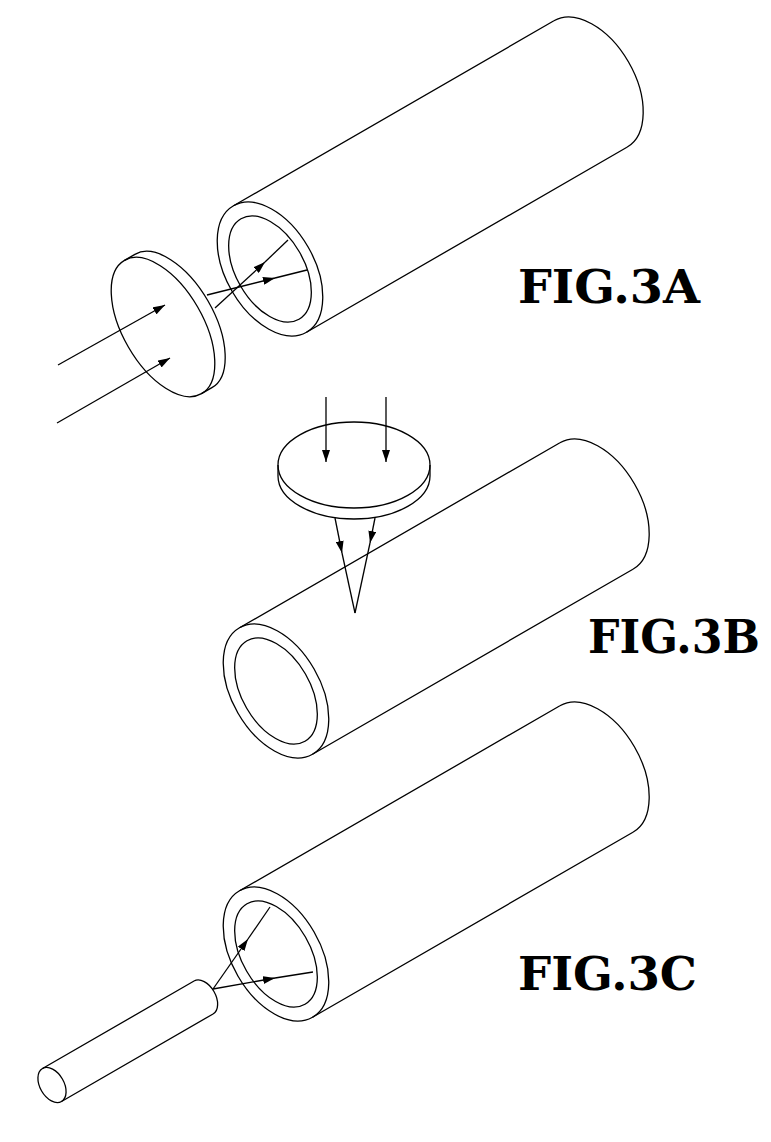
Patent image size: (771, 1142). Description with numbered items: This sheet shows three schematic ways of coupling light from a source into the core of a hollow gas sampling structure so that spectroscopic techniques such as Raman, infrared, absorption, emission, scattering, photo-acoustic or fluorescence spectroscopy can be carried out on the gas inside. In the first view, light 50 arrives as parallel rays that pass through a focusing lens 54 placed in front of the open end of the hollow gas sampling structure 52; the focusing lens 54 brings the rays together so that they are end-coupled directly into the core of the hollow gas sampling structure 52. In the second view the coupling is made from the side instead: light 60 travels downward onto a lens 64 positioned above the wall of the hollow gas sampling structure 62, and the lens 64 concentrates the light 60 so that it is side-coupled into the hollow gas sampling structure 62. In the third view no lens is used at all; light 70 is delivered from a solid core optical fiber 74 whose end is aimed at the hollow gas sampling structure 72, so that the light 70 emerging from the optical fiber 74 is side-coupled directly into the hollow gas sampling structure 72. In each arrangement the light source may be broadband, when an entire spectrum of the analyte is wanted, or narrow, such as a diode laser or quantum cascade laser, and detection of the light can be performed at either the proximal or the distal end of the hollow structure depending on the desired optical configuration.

In FIG. 3A, the light 50 is at (100, 345).
In FIG. 3A, the hollow gas sampling structure 52 is at (530, 141).
In FIG. 3A, the focusing lens 54 is at (170, 257).
In FIG. 3B, the light 60 is at (327, 420).
In FIG. 3B, the hollow gas sampling structure 62 is at (545, 563).
In FIG. 3B, the lens 64 is at (288, 503).
In FIG. 3C, the light 70 is at (243, 980).
In FIG. 3C, the hollow gas sampling structure 72 is at (502, 843).
In FIG. 3C, the optical fiber 74 is at (122, 1023).